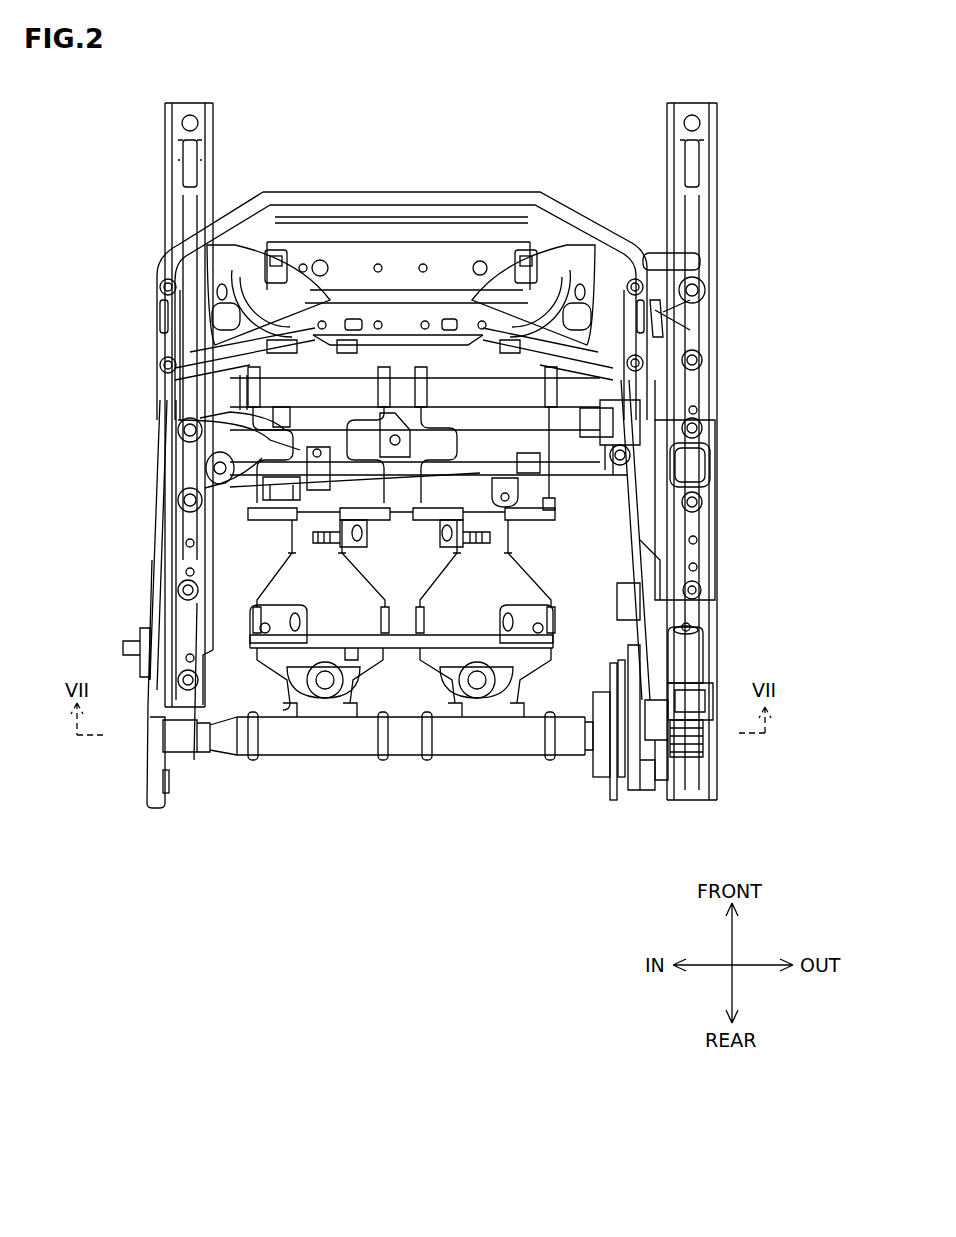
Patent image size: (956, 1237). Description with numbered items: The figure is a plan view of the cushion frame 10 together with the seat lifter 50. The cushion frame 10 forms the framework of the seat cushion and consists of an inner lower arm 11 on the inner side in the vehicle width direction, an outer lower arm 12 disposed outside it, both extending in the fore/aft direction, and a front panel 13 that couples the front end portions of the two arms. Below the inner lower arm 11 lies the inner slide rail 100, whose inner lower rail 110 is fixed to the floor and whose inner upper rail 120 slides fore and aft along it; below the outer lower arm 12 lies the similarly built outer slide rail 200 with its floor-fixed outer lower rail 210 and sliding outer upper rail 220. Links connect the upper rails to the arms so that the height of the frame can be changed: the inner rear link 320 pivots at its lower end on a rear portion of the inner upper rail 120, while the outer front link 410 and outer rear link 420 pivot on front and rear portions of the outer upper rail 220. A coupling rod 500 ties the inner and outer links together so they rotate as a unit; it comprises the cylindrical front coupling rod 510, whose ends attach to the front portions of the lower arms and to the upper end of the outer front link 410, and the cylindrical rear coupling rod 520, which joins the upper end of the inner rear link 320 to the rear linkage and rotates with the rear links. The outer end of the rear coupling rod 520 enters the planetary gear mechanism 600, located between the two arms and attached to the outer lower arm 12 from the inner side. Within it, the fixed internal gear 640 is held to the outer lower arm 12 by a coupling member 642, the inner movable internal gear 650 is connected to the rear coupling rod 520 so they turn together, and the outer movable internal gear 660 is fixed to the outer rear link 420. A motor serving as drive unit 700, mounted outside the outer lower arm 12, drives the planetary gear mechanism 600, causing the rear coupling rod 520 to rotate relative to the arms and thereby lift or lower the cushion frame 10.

The cushion frame 10 is at (560, 190).
The inner lower arm 11 is at (160, 483).
The outer lower arm 12 is at (640, 547).
The front panel 13 is at (408, 228).
The seat lifter 50 is at (676, 730).
The inner slide rail 100 is at (131, 405).
The inner lower rail 110 is at (197, 528).
The inner upper rail 120 is at (187, 555).
The outer slide rail 200 is at (735, 451).
The outer lower rail 210 is at (718, 360).
The outer upper rail 220 is at (693, 386).
The inner rear link 320 is at (194, 760).
The outer front link 410 is at (690, 333).
The outer rear link 420 is at (627, 747).
The coupling rod 500 is at (378, 768).
The front coupling rod 510 is at (433, 747).
The rear coupling rod 520 is at (408, 790).
The planetary gear mechanism 600 is at (601, 734).
The fixed internal gear 640 is at (610, 792).
The coupling member 642 is at (633, 793).
The inner movable internal gear 650 is at (595, 758).
The outer movable internal gear 660 is at (633, 733).
The drive unit 700 is at (711, 642).